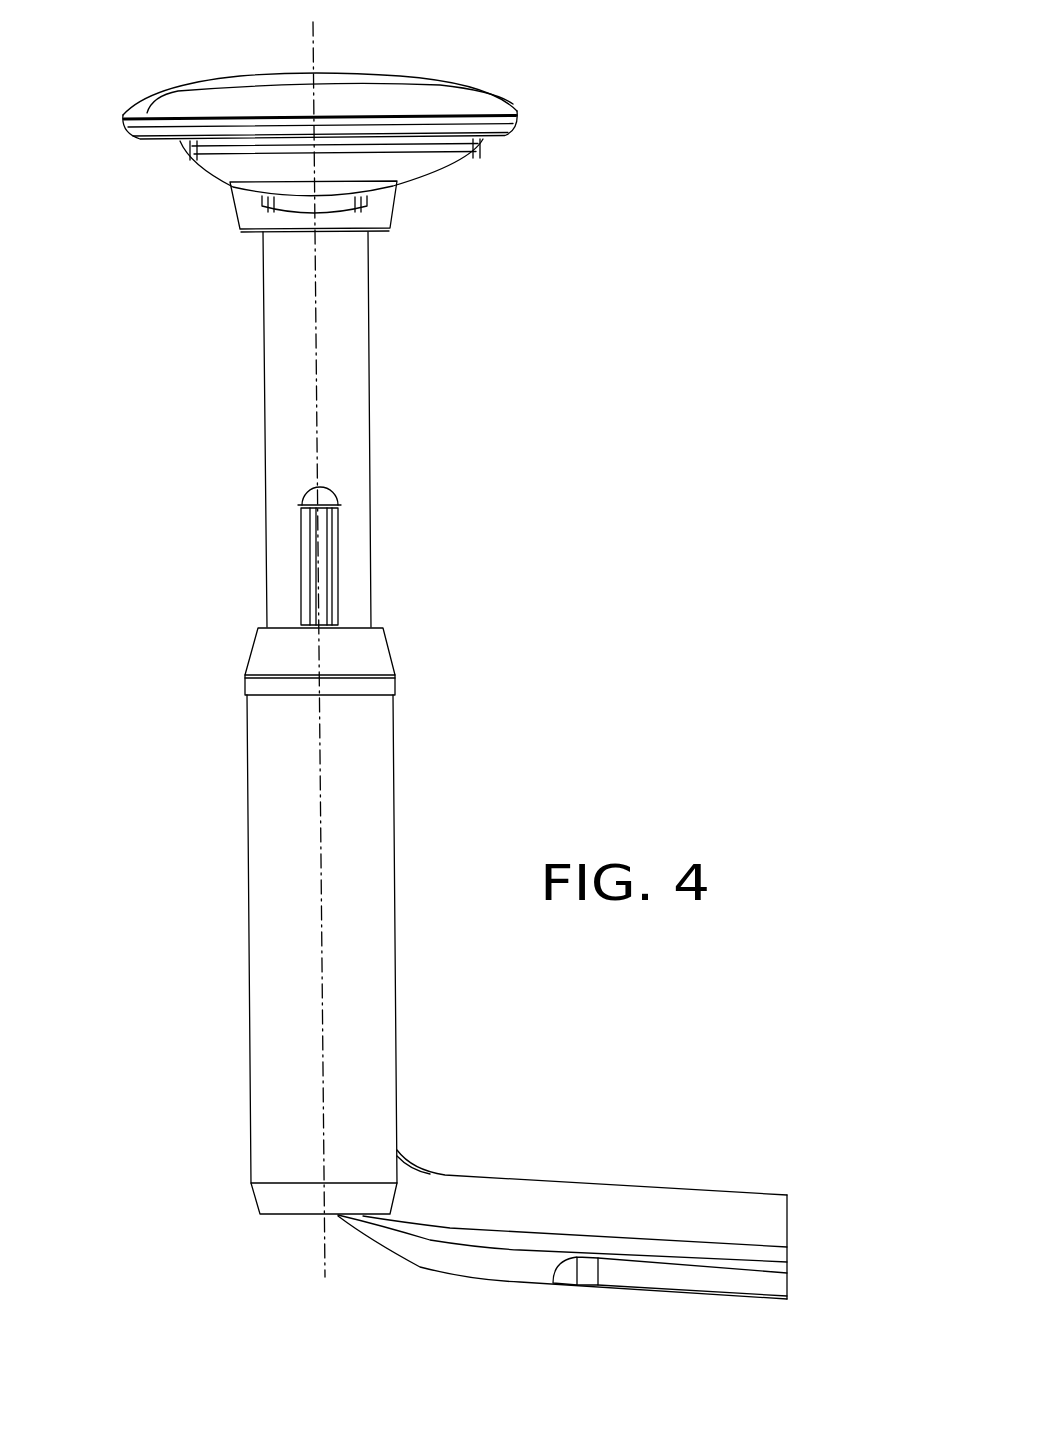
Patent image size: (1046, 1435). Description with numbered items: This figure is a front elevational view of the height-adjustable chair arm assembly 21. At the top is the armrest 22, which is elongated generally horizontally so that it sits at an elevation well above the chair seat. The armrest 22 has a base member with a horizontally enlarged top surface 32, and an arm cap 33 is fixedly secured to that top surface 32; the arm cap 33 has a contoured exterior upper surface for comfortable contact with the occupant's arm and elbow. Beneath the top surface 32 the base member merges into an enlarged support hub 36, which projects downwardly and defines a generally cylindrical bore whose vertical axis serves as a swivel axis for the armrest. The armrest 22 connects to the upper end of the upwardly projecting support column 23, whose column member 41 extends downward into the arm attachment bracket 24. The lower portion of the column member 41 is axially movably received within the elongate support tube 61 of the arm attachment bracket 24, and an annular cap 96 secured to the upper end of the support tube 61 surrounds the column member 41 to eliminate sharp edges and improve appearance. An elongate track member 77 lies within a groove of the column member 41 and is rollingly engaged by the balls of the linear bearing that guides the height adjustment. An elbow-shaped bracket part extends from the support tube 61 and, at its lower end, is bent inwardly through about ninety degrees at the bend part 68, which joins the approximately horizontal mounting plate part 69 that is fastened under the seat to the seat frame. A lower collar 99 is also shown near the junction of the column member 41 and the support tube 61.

The height-adjustable chair arm assembly 21 is at (405, 450).
The armrest 22 is at (510, 136).
The support column 23 is at (382, 337).
The arm attachment bracket 24 is at (238, 986).
The top surface 32 is at (158, 140).
The arm cap 33 is at (435, 87).
The support hub 36 is at (243, 197).
The column member 41 is at (282, 387).
The support tube 61 is at (380, 738).
The bend part 68 is at (422, 1185).
The mounting plate part 69 is at (647, 1202).
The track member 77 is at (310, 540).
The annular cap 96 is at (438, 163).
The collar 99 is at (375, 652).